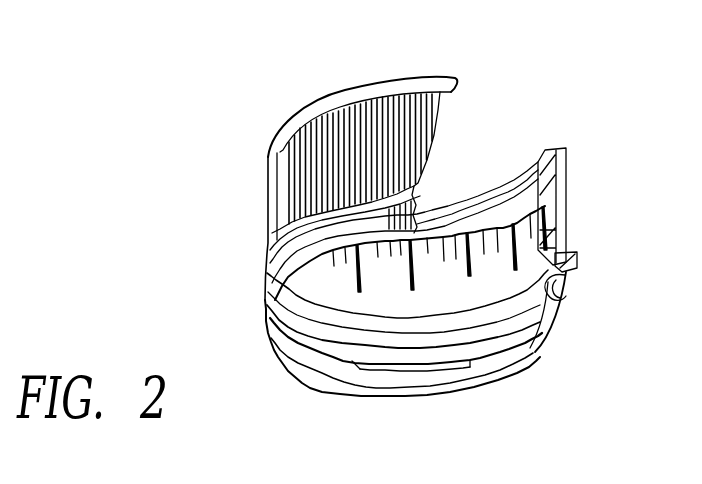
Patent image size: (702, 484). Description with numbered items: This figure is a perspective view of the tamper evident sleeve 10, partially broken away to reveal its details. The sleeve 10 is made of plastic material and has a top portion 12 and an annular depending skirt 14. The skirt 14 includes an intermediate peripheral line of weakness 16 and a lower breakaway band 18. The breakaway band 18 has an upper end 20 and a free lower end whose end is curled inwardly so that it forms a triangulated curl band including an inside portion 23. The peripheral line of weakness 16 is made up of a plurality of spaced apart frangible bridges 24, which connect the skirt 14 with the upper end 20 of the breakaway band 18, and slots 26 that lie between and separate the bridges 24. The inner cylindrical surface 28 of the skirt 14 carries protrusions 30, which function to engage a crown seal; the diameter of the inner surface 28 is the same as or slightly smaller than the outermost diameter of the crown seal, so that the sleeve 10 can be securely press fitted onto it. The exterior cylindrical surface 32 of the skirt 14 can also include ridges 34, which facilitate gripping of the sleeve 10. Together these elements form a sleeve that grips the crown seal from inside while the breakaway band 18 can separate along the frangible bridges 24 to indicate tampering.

The tamper evident sleeve 10 is at (406, 40).
The top portion 12 is at (560, 152).
The annular depending skirt 14 is at (588, 199).
The intermediate peripheral line of weakness 16 is at (590, 271).
The lower breakaway band 18 is at (570, 307).
The upper end 20 is at (572, 286).
The inside portion 23 is at (558, 284).
The frangible bridges 24 is at (358, 360).
The slots 26 is at (388, 368).
The inner cylindrical surface 28 is at (513, 292).
The protrusions 30 is at (410, 285).
The exterior cylindrical surface 32 is at (270, 224).
The ridges 34 is at (292, 182).